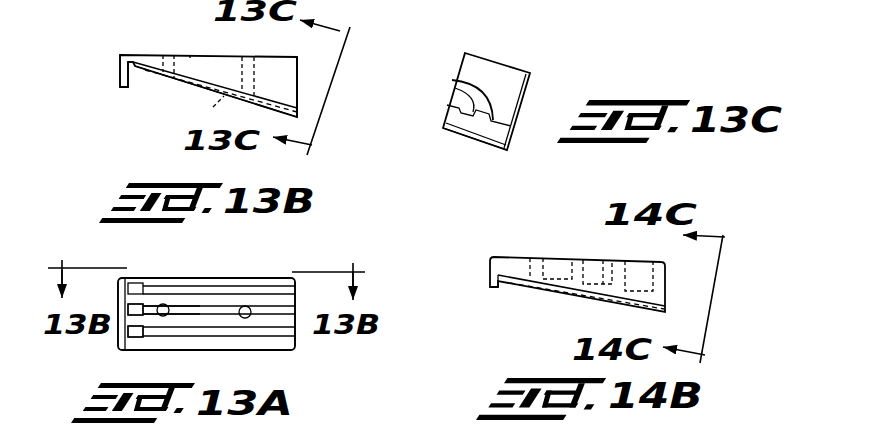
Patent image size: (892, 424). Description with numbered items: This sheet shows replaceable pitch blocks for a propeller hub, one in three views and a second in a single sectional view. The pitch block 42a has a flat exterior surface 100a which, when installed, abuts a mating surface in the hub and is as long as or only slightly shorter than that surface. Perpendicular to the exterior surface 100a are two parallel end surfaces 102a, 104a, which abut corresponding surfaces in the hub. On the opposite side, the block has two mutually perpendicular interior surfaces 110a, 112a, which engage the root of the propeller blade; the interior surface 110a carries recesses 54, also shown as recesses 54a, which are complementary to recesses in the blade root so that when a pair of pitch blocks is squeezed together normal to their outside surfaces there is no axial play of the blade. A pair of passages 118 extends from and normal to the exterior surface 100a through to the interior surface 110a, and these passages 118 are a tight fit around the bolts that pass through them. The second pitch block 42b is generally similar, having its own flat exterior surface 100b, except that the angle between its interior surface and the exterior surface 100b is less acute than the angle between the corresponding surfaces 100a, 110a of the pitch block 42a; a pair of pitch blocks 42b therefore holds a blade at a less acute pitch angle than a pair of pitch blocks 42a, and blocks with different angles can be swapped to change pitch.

In FIG. 13B, the pitch block 42a is at (117, 50).
In FIG. 13A, the pitch block 42a is at (240, 277).
In FIG. 13C, the pitch block 42a is at (532, 88).
In FIG. 14B, the pitch block 42b is at (670, 300).
In FIG. 13B, the recesses 54 is at (203, 107).
In FIG. 13A, the recesses 54 is at (135, 333).
In FIG. 13C, the recesses 54 is at (500, 136).
In FIG. 13A, the recesses 54a is at (187, 325).
In FIG. 13C, the recesses 54a is at (453, 82).
In FIG. 13B, the flat exterior surface 100a is at (190, 54).
In FIG. 14B, the flat exterior surface 100b is at (516, 257).
In FIG. 13B, the end surface 102a is at (119, 68).
In FIG. 13A, the end surface 102a is at (118, 338).
In FIG. 13B, the end surface 104a is at (300, 68).
In FIG. 13A, the end surface 104a is at (297, 328).
In FIG. 13B, the interior surface 110a is at (170, 83).
In FIG. 13B, the interior surface 112a is at (134, 79).
In FIG. 13C, the interior surface 112a is at (500, 138).
In FIG. 13B, the passages 118 is at (162, 47).
In FIG. 13A, the passages 118 is at (163, 317).